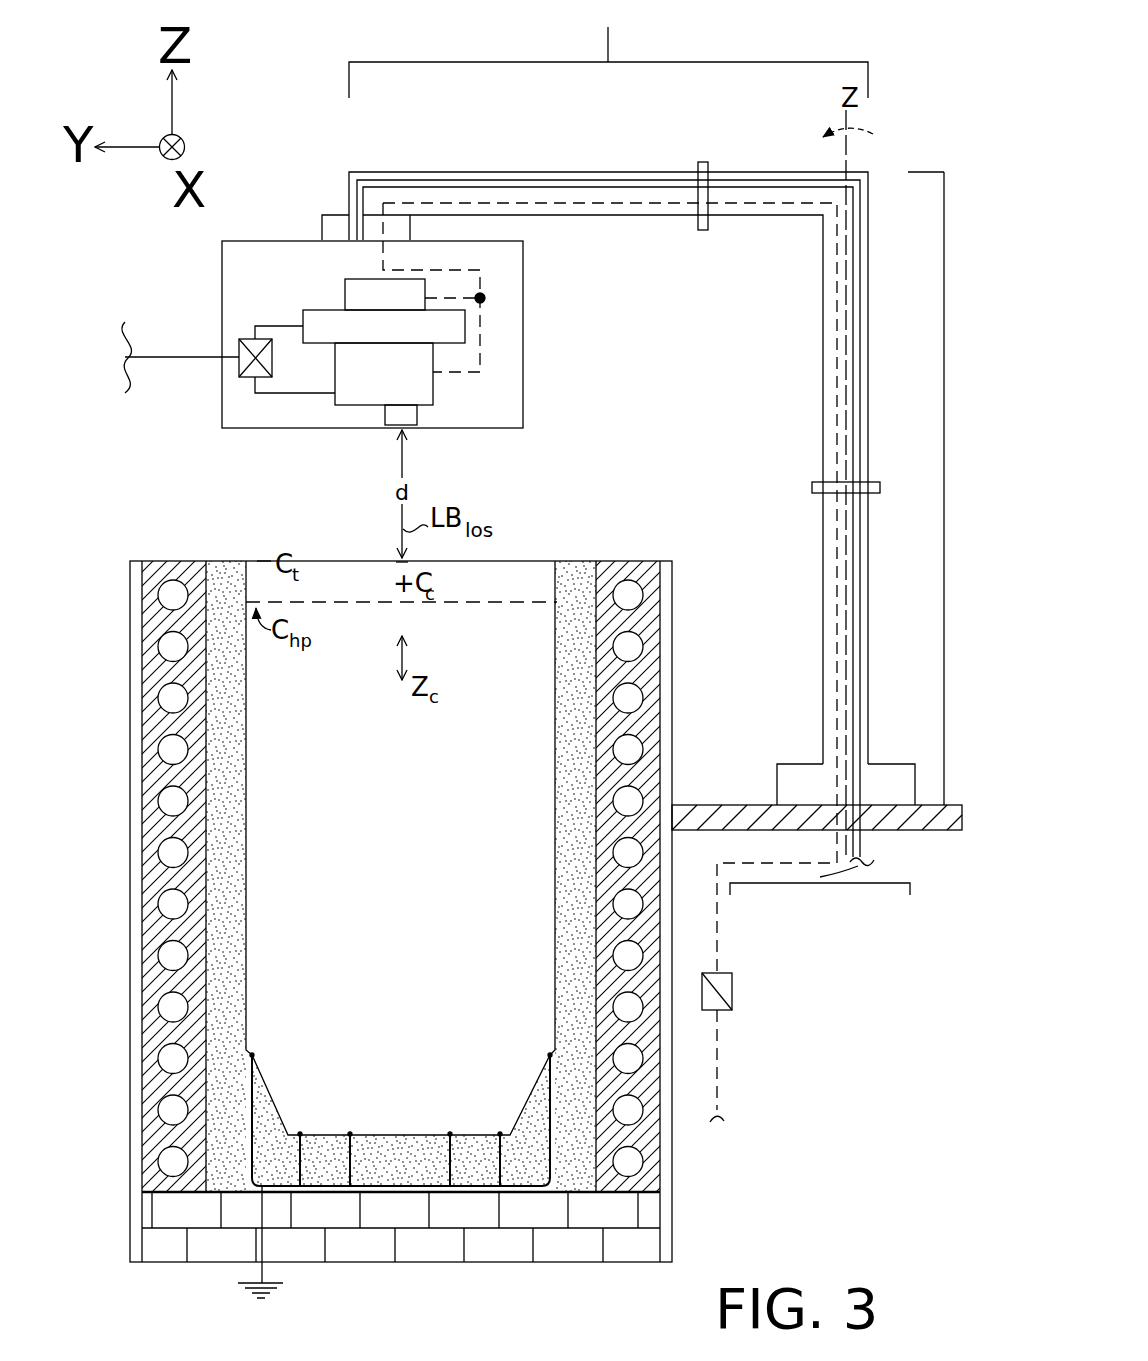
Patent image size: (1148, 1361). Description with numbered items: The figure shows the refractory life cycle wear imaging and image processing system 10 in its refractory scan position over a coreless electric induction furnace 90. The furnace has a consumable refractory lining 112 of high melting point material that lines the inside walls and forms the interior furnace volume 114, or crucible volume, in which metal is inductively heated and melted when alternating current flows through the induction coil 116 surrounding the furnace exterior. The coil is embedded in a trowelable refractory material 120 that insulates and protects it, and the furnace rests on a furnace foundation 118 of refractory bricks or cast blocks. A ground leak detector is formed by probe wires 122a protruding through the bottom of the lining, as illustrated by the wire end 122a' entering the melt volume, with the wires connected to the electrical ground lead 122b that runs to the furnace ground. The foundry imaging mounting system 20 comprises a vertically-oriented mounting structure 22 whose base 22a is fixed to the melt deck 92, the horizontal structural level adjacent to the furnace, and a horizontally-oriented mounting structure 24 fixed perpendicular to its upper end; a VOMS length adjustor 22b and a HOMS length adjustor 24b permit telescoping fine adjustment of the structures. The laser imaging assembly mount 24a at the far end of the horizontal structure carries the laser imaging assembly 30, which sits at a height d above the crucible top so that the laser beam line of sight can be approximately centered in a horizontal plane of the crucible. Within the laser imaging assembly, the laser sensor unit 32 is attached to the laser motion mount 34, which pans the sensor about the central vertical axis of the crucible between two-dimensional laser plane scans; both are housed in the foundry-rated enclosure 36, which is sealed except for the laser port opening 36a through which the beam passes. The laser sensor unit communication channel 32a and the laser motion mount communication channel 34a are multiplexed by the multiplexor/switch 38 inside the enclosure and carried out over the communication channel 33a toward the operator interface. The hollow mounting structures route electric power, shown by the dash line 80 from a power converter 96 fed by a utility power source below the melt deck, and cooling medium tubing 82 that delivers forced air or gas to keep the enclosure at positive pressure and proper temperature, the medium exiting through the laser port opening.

The refractory life cycle wear imaging and image processing system 10 is at (265, 96).
The foundry imaging mounting system 20 is at (655, 415).
The vertically-oriented mounting structure 22 is at (944, 490).
The base 22a is at (795, 783).
The VOMS length adjustor 22b is at (812, 488).
The horizontally-oriented mounting structure 24 is at (608, 428).
The laser imaging assembly mount 24a is at (322, 226).
The HOMS length adjustor 24b is at (703, 231).
The laser imaging assembly 30 is at (186, 434).
The laser sensor unit 32 is at (428, 402).
The laser sensor unit communication channel 32a is at (303, 395).
The communication channel 33a is at (145, 355).
The laser motion mount 34 is at (352, 293).
The laser motion mount communication channel 34a is at (277, 326).
The enclosure 36 is at (523, 343).
The laser port opening 36a is at (378, 432).
The multiplexor/switch 38 is at (252, 338).
The dash line 80 is at (835, 345).
The cooling medium tubing 82 is at (858, 408).
The coreless electric induction furnace 90 is at (98, 803).
The melt deck 92 is at (707, 826).
The power converter 96 is at (732, 980).
The consumable refractory lining 112 is at (238, 938).
The interior furnace volume 114 is at (480, 828).
The induction coil 116 is at (631, 592).
The furnace foundation 118 is at (480, 1245).
The trowelable refractory material 120 is at (657, 665).
The probe wires 122a is at (401, 1119).
The wire end 122a' is at (315, 1099).
The electrical ground lead 122b is at (266, 1268).